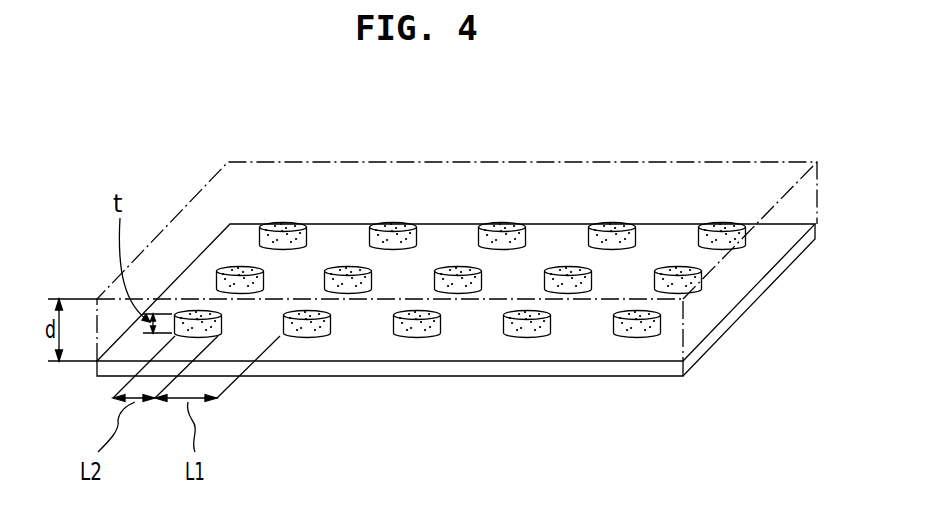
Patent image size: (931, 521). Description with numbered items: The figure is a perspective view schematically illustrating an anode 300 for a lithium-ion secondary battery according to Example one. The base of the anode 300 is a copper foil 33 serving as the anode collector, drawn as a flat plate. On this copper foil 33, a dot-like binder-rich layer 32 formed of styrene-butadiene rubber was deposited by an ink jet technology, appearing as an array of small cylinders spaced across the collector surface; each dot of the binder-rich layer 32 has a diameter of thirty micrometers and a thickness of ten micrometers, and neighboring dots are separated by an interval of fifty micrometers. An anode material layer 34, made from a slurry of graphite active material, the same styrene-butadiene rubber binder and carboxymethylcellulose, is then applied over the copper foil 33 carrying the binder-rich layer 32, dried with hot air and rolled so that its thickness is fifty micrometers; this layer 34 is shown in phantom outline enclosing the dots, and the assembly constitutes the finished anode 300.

The anode 300 is at (458, 143).
The binder-rich layer 32 is at (283, 222).
The copper foil 33 is at (535, 368).
The anode material layer 34 is at (200, 187).